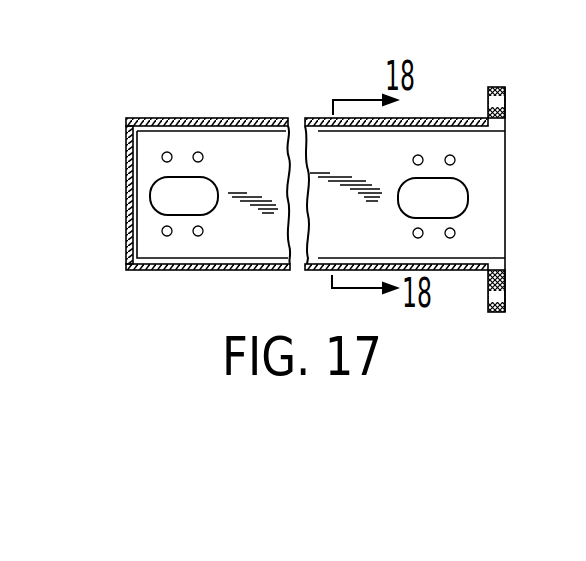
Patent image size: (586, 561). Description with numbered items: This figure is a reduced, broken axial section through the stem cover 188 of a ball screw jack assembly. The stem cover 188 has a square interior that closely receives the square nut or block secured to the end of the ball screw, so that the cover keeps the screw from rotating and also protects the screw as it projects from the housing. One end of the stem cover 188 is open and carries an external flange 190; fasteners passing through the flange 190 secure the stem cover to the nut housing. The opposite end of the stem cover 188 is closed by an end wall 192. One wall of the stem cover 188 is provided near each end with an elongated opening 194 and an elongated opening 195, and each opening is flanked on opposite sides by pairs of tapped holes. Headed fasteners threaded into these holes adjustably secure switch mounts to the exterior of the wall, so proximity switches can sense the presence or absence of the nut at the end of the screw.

The stem cover 188 is at (432, 115).
The external flange 190 is at (505, 88).
The end wall 192 is at (128, 248).
The elongated opening 194 is at (218, 176).
The elongated opening 195 is at (468, 195).